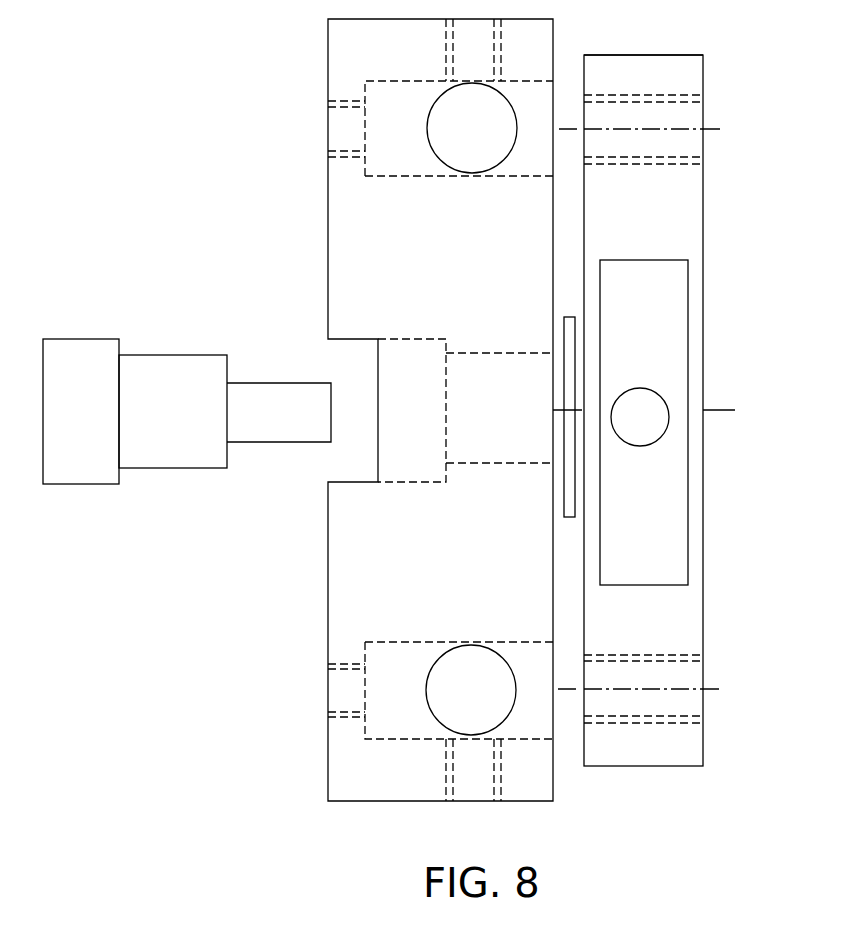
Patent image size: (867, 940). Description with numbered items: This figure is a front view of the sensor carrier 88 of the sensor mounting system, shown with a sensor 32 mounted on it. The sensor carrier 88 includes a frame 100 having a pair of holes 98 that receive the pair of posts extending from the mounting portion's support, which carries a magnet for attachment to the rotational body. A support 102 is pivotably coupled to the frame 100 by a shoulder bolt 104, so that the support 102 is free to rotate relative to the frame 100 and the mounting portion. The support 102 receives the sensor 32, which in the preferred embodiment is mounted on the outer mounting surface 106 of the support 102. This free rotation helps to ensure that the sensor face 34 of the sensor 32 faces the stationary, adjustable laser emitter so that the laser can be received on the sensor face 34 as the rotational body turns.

The sensor carrier 88 is at (178, 581).
The frame 100 is at (333, 578).
The holes 98 is at (472, 172).
The shoulder bolt 104 is at (87, 347).
The support 102 is at (695, 618).
The outer mounting surface 106 is at (698, 225).
The sensor 32 is at (683, 299).
The sensor face 34 is at (637, 440).